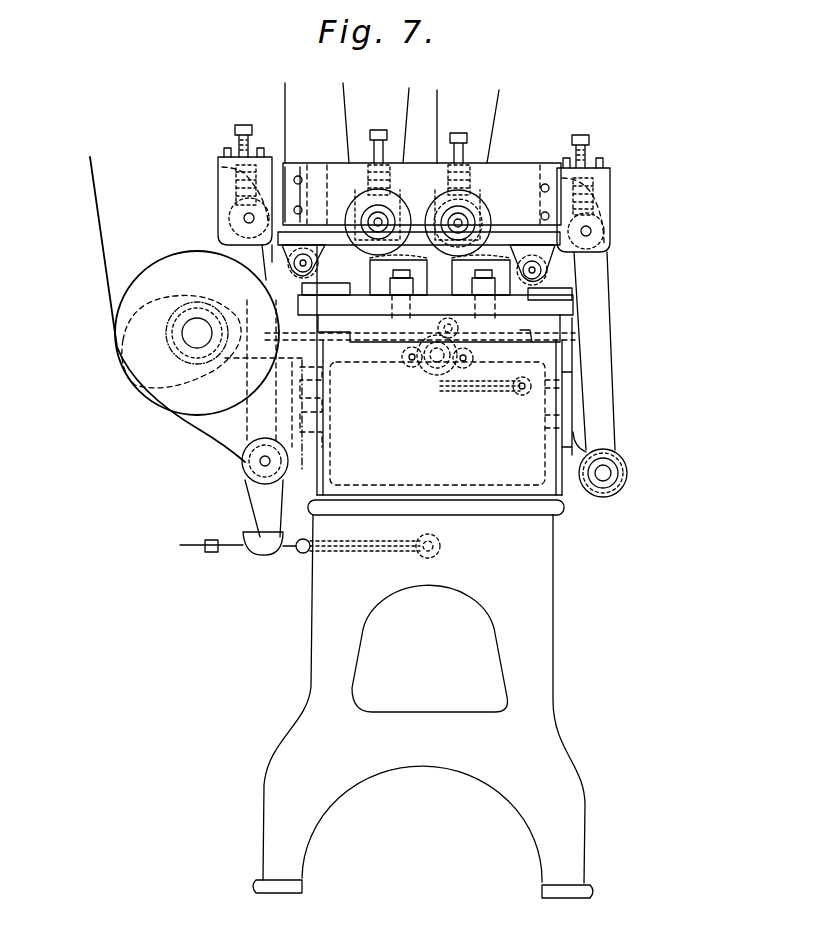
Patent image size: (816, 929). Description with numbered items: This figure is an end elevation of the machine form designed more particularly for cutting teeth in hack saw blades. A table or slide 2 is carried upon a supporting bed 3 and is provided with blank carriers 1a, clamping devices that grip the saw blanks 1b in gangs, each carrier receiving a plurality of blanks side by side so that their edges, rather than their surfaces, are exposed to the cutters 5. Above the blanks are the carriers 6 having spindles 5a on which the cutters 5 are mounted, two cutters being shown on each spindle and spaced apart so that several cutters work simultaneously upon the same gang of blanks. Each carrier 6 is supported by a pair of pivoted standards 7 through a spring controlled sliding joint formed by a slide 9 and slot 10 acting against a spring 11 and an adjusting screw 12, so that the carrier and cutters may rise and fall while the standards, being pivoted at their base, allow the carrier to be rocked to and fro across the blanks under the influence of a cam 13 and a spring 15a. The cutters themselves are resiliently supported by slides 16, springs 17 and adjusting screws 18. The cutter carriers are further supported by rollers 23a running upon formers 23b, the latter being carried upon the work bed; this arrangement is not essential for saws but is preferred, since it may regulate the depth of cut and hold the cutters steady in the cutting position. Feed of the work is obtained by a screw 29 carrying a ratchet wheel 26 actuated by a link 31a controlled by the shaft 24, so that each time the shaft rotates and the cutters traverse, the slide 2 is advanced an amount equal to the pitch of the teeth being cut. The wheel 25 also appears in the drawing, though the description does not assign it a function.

The blank carrier 1a is at (412, 272).
The saw blank 1b is at (367, 295).
The slide 2 is at (565, 310).
The supporting bed 3 is at (423, 608).
The cutter 5 is at (377, 222).
The spindle 5a is at (456, 224).
The carrier 6 is at (320, 175).
The pivoted standard 7 is at (225, 185).
The slide 9 is at (232, 220).
The slot 10 is at (222, 238).
The spring 11 is at (215, 178).
The adjusting screw 12 is at (238, 130).
The cam 13 is at (135, 360).
The spring 15a is at (330, 560).
The slide 16 is at (345, 200).
The spring 17 is at (440, 182).
The adjusting screw 18 is at (378, 130).
The roller 23a is at (293, 266).
The former 23b is at (338, 292).
The shaft 24 is at (197, 318).
The wheel 25 is at (147, 265).
The ratchet wheel 26 is at (432, 370).
The screw 29 is at (442, 372).
The link 31a is at (338, 355).